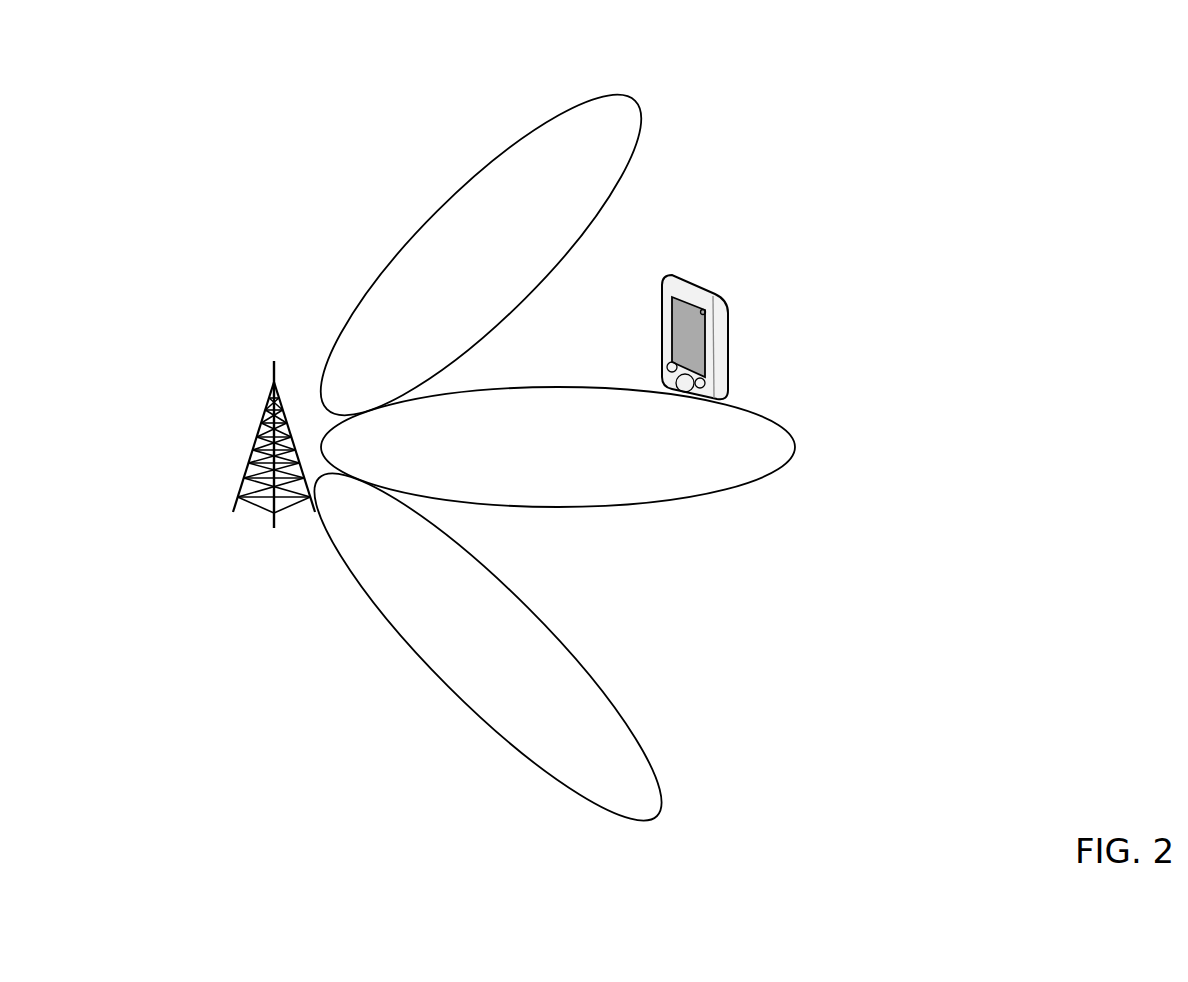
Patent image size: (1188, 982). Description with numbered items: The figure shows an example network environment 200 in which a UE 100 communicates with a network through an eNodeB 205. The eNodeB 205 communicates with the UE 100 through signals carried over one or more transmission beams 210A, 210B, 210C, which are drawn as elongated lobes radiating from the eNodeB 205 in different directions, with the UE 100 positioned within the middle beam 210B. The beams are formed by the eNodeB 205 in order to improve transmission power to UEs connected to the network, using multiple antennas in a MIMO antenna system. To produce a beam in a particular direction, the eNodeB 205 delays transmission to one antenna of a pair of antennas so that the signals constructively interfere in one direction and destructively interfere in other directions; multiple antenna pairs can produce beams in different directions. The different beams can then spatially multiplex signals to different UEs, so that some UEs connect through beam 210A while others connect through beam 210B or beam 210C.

The network environment 200 is at (966, 122).
The eNodeB 205 is at (241, 355).
The transmission beam 210A is at (649, 93).
The transmission beam 210B is at (779, 408).
The transmission beam 210C is at (655, 733).
The UE 100 is at (734, 263).